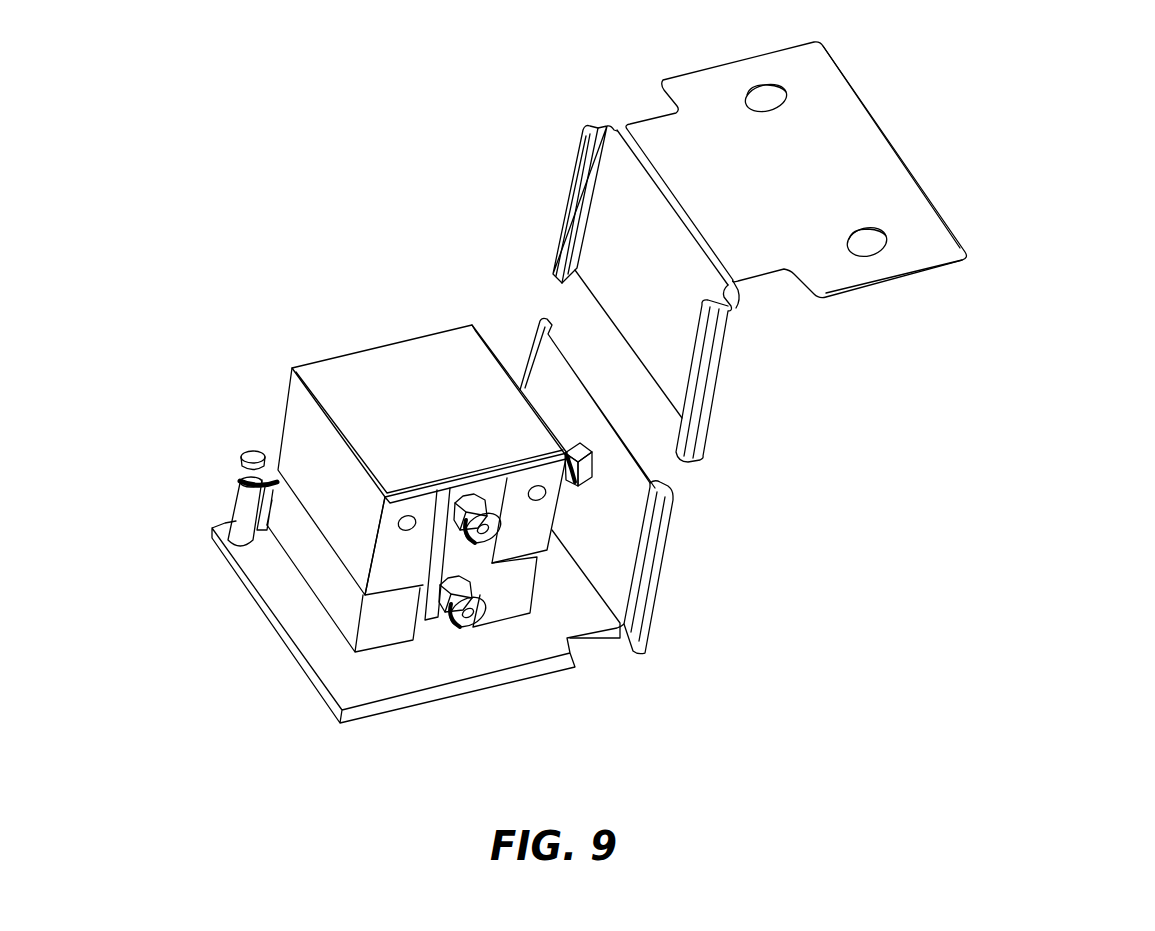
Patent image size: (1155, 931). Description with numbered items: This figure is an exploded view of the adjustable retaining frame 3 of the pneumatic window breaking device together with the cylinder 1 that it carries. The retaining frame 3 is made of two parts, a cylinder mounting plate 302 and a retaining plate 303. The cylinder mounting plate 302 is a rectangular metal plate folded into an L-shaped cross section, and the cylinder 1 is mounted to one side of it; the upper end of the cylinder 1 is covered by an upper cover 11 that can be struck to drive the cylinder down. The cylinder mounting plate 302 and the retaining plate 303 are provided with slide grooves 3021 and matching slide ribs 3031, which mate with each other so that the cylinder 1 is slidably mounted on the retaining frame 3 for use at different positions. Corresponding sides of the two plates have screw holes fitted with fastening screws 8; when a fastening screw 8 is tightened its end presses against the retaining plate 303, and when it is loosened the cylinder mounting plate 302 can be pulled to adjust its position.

The retaining frame 3 is at (542, 210).
The cylinder mounting plate 302 is at (885, 178).
The slide grooves 3021 is at (595, 132).
The retaining plate 303 is at (492, 682).
The slide ribs 3031 is at (648, 587).
The upper cover 11 is at (350, 367).
The cylinder 1 is at (463, 568).
The fastening screws 8 is at (585, 473).